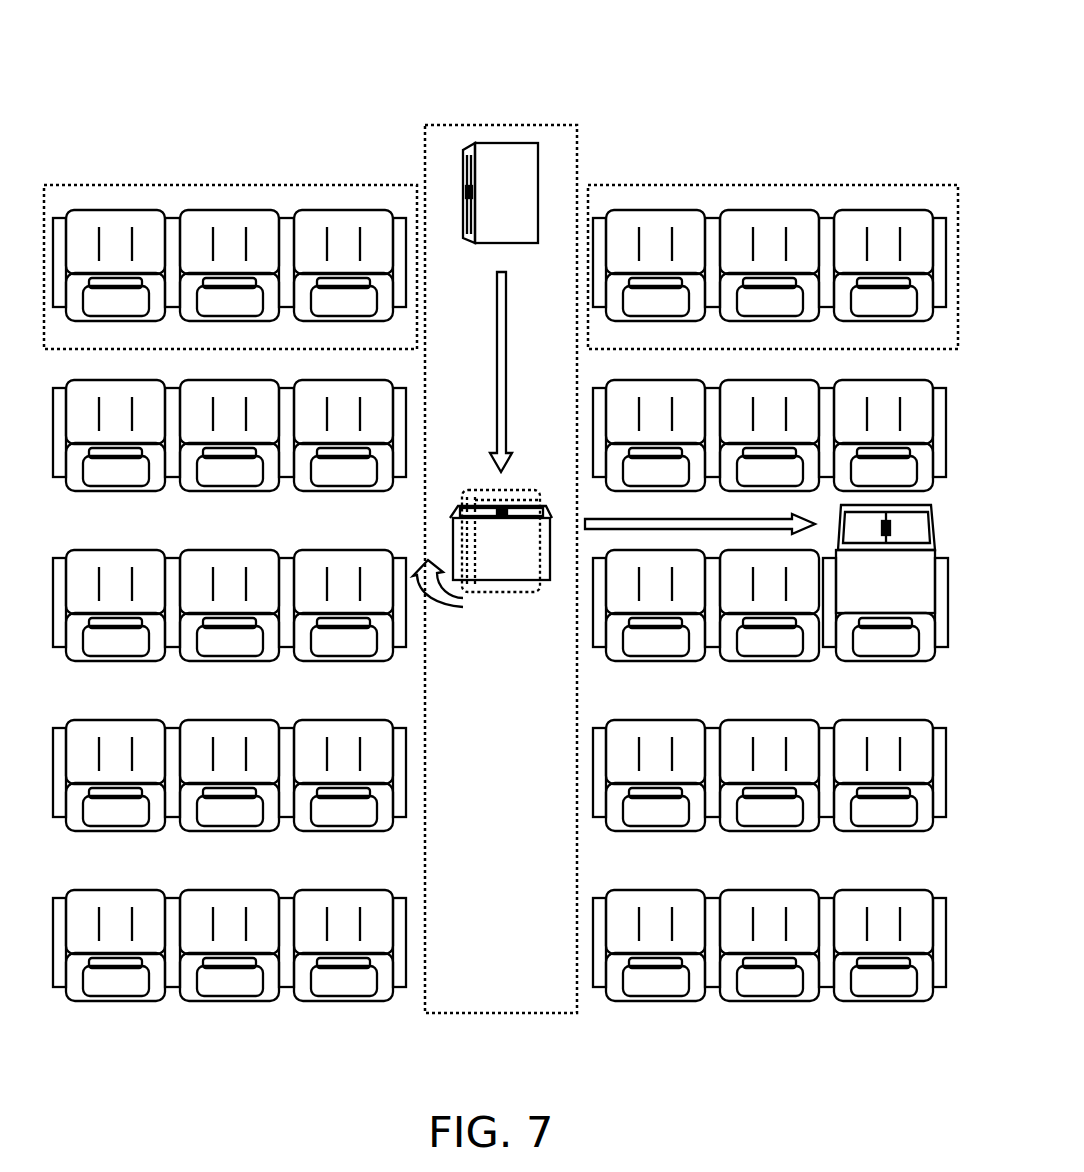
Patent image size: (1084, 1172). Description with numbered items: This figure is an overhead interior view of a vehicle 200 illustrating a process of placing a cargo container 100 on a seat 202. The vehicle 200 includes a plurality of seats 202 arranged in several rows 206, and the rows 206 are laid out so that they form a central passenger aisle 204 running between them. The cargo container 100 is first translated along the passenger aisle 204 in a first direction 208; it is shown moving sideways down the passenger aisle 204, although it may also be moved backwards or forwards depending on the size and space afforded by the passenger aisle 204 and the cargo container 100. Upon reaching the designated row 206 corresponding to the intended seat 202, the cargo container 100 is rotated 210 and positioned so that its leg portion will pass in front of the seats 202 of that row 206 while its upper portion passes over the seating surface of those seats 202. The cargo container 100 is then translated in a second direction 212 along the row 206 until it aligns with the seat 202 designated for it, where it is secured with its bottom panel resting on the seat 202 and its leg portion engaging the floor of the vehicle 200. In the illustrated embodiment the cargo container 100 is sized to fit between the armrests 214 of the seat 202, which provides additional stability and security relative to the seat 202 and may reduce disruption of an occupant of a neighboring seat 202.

The cargo container 100 is at (543, 140).
The vehicle 200 is at (167, 98).
The seat 202 is at (130, 210).
The passenger aisle 204 is at (425, 125).
The row 206 is at (307, 185).
The first direction 208 is at (505, 375).
The rotation 210 is at (463, 608).
The second direction 212 is at (552, 582).
The armrest 214 is at (828, 648).